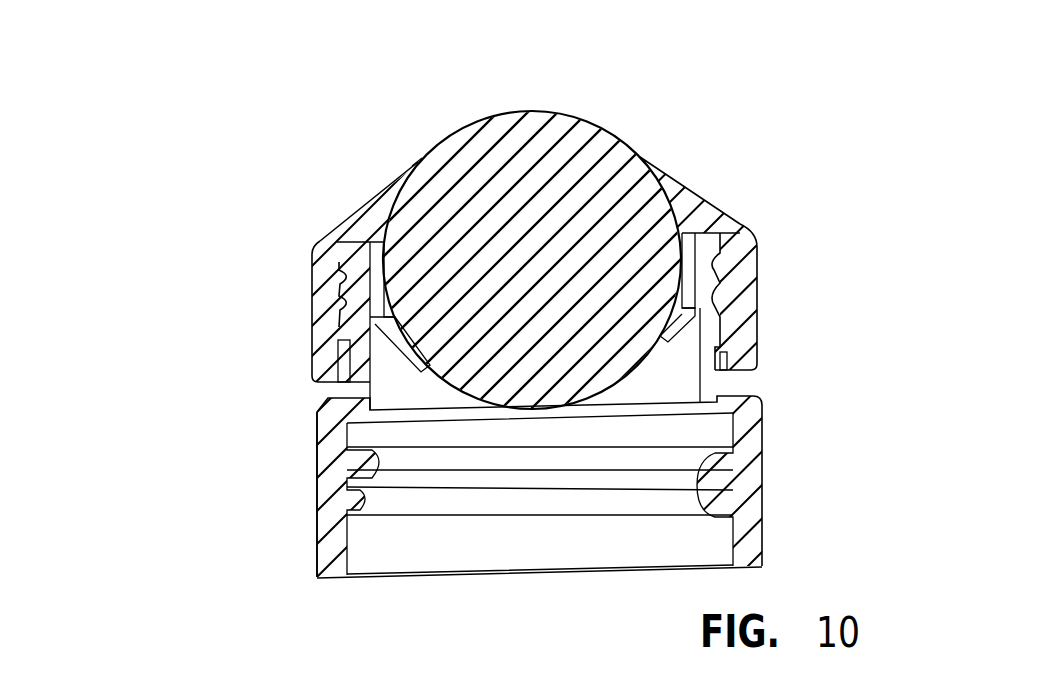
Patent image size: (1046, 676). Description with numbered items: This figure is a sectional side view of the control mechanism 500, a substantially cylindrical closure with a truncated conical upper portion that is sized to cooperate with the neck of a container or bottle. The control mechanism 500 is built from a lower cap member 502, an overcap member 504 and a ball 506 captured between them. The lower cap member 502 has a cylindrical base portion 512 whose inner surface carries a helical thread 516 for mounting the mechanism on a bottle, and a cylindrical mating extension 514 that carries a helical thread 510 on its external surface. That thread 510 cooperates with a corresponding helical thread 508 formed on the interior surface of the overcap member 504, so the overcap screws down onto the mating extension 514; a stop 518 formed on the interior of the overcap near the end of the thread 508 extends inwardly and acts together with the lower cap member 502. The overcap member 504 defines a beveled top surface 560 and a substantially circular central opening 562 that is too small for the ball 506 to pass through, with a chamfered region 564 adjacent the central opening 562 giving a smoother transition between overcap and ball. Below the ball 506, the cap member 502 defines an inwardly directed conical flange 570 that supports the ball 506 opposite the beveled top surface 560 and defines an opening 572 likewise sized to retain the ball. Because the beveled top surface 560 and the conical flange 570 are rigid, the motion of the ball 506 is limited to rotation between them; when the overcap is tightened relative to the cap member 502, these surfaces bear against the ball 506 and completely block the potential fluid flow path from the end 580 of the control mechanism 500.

The control mechanism 500 is at (236, 237).
The lower cap member 502 is at (533, 338).
The overcap member 504 is at (523, 338).
The ball 506 is at (593, 153).
The helical thread 508 is at (338, 280).
The helical thread 510 is at (342, 323).
The cylindrical base portion 512 is at (317, 457).
The cylindrical mating extension 514 is at (358, 270).
The helical thread 516 is at (355, 488).
The stop 518 is at (740, 352).
The beveled top surface 560 is at (703, 188).
The central opening 562 is at (419, 141).
The chamfered region 564 is at (397, 177).
The conical flange 570 is at (333, 397).
The opening 572 is at (446, 388).
The end 580 is at (512, 577).